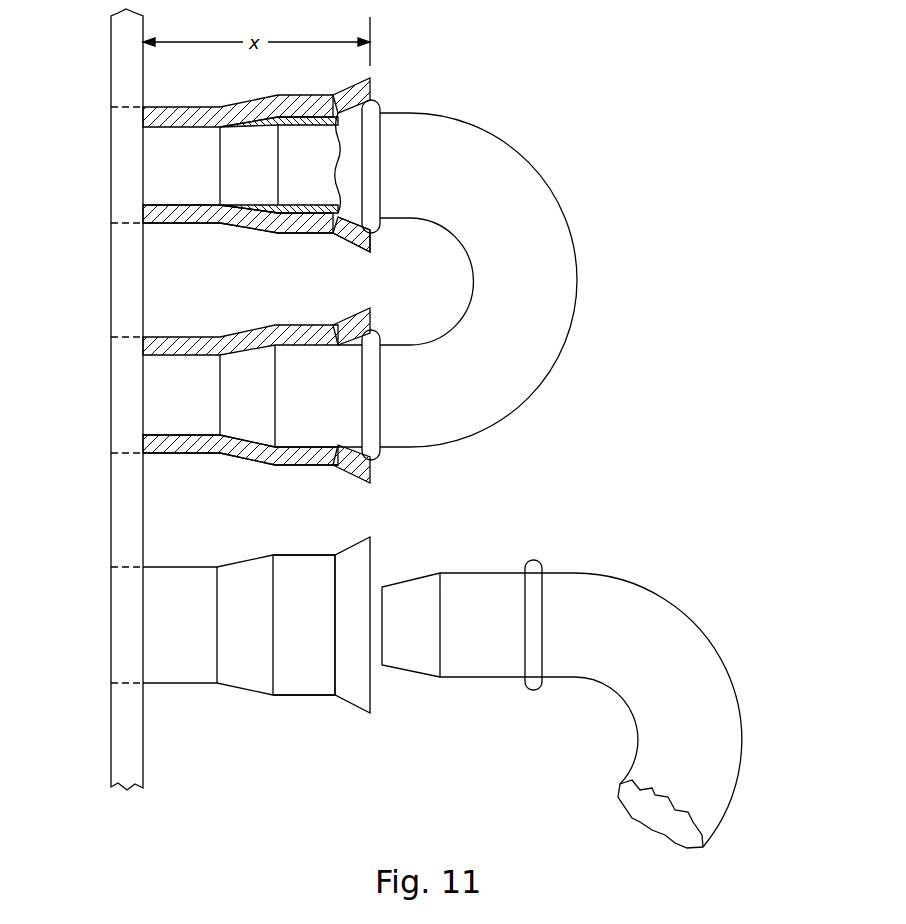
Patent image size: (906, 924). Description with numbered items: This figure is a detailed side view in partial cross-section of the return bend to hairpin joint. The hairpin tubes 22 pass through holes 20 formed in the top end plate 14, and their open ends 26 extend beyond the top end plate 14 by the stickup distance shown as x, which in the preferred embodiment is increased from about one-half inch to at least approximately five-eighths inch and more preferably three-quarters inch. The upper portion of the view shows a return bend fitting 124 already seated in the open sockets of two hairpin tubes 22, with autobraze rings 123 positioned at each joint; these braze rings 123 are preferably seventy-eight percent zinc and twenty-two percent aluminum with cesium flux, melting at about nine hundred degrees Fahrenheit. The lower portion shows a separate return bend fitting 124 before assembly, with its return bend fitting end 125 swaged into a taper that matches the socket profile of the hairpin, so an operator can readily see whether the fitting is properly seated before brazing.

The top end plate 14 is at (111, 527).
The holes 20 is at (128, 107).
The hairpin tubes 22 is at (178, 685).
The open ends 26 is at (370, 245).
The autobraze rings 123 is at (380, 102).
The return bend fittings 124 is at (563, 343).
The return bend fitting ends 125 is at (407, 668).